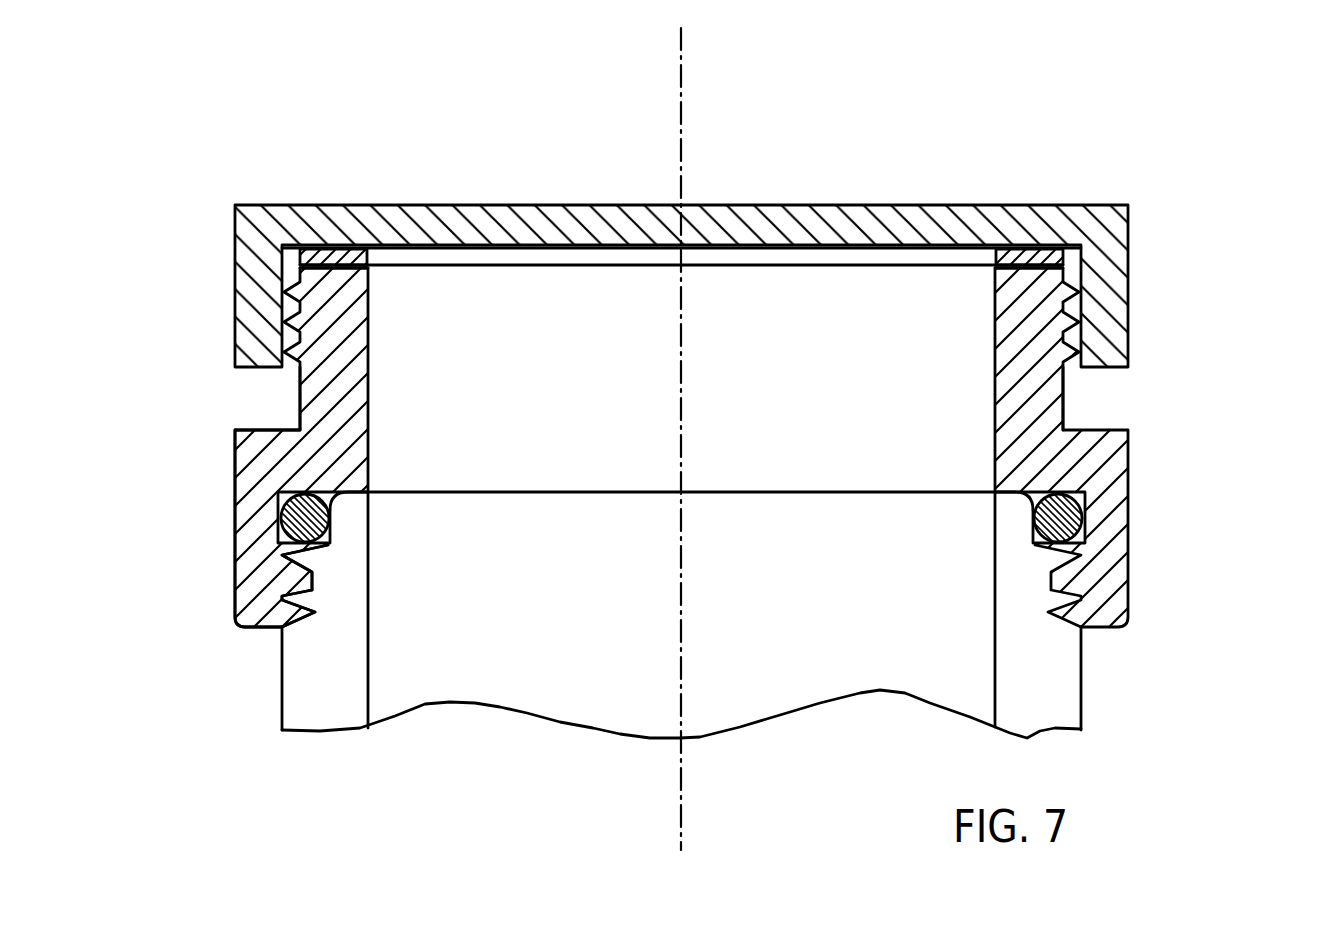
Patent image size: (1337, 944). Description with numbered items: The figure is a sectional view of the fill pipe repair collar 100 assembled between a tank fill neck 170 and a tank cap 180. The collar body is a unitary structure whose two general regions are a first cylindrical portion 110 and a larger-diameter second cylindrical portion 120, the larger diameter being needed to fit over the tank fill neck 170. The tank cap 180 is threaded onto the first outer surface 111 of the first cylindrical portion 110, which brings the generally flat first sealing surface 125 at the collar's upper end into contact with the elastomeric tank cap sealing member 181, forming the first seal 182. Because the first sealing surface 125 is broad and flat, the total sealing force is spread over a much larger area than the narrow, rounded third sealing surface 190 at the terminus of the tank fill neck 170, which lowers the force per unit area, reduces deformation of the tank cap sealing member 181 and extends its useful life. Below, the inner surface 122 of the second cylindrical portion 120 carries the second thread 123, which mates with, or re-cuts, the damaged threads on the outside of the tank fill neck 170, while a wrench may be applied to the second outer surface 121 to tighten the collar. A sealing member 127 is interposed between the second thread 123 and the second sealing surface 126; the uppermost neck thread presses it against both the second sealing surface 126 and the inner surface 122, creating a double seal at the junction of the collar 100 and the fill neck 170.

The repair collar 100 is at (1215, 428).
The first cylindrical portion 110 is at (355, 373).
The first outer surface 111 is at (297, 402).
The second cylindrical portion 120 is at (233, 498).
The second outer surface 121 is at (233, 606).
The inner surface 122 is at (282, 545).
The second thread 123 is at (291, 627).
The first sealing surface 125 is at (322, 268).
The second sealing surface 126 is at (365, 494).
The sealing member 127 is at (333, 510).
The tank fill neck 170 is at (358, 705).
The tank cap 180 is at (1075, 213).
The tank cap sealing member 181 is at (352, 261).
The first seal 182 is at (380, 277).
The third sealing surface 190 is at (325, 535).